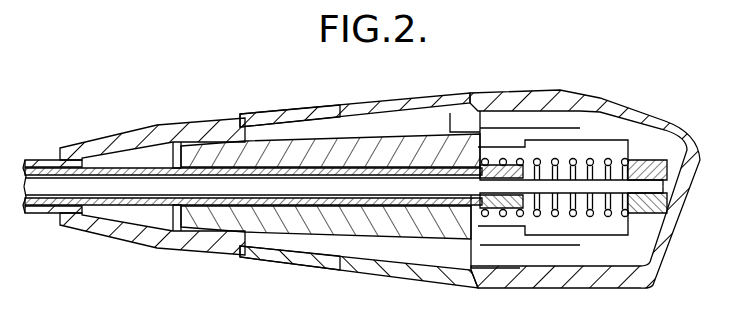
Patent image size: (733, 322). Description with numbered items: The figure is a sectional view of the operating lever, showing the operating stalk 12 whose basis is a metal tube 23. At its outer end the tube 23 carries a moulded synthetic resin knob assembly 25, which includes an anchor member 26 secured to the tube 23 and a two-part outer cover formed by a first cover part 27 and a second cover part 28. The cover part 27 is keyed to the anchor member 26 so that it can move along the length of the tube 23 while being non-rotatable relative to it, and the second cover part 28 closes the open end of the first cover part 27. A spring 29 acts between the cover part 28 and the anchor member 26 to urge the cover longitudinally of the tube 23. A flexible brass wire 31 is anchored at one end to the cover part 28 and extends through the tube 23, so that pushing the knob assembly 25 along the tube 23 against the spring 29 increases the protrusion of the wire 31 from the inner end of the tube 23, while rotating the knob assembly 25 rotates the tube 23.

The operating stalk 12 is at (47, 158).
The metal tube 23 is at (119, 170).
The knob assembly 25 is at (361, 92).
The anchor member 26 is at (424, 146).
The first cover part 27 is at (274, 115).
The second cover part 28 is at (572, 83).
The spring 29 is at (594, 160).
The flexible brass wire 31 is at (471, 190).